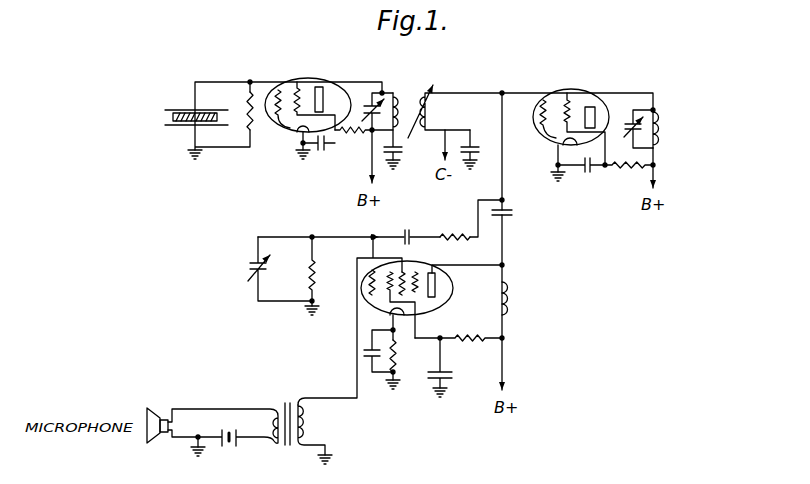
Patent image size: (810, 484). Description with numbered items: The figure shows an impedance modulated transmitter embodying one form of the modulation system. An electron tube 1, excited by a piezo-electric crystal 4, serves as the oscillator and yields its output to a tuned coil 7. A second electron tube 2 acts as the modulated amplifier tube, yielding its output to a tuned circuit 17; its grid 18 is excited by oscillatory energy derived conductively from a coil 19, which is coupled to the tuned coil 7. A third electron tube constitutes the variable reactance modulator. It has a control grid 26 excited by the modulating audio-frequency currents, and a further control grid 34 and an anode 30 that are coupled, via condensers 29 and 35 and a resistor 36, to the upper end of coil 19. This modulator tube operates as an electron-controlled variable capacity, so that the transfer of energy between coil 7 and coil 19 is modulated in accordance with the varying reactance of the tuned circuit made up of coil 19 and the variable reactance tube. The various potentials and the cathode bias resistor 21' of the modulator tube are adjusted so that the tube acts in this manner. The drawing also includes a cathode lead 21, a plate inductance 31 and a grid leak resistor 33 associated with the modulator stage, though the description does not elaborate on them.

The electron tube 1 is at (308, 97).
The electron tube 2 is at (571, 118).
The piezo-electric crystal 4 is at (170, 118).
The tuned coil 7 is at (391, 95).
The tuned circuit 17 is at (658, 112).
The grid 18 is at (538, 116).
The coil 19 is at (427, 108).
The cathode lead 21 is at (365, 324).
The cathode bias resistor 21' is at (396, 351).
The control grid 26 is at (405, 293).
The condenser 29 is at (512, 214).
The anode 30 is at (436, 286).
The plate inductance 31 is at (513, 297).
The grid leak resistor 33 is at (310, 277).
The control grid 34 is at (370, 284).
The condenser 35 is at (407, 229).
The resistor 36 is at (451, 233).